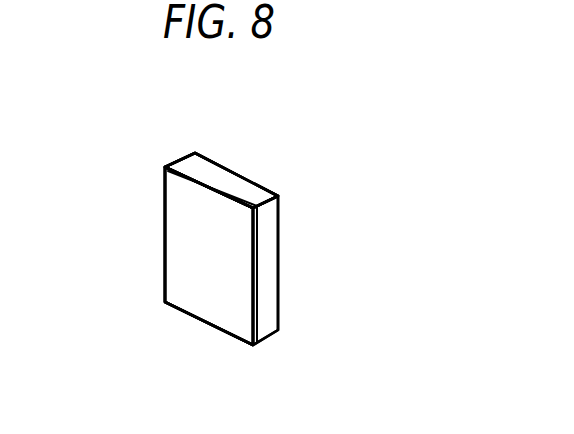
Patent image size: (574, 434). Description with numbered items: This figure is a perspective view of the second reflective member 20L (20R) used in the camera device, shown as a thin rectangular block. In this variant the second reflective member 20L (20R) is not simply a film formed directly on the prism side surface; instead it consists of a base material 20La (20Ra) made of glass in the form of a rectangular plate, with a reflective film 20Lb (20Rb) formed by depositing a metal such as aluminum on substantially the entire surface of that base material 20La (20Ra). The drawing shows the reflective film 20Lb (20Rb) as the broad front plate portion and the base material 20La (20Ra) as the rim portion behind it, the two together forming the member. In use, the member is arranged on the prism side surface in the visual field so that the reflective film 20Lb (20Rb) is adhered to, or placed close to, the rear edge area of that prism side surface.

The second reflective member 20L is at (163, 144).
The second reflective member 20R is at (221, 249).
The base material 20La is at (231, 180).
The base material 20Ra is at (221, 180).
The reflective film 20Lb is at (212, 308).
The reflective film 20Rb is at (209, 256).